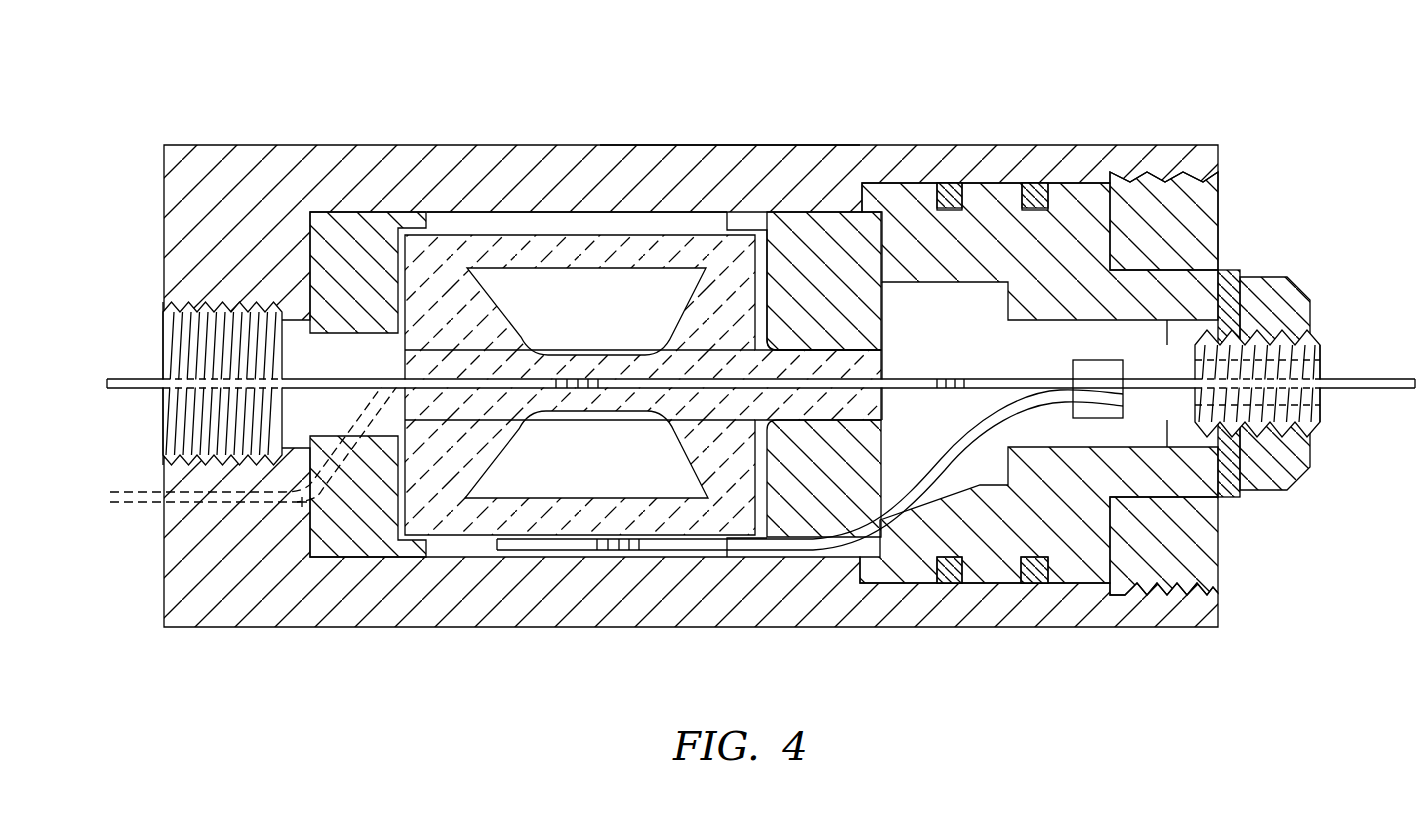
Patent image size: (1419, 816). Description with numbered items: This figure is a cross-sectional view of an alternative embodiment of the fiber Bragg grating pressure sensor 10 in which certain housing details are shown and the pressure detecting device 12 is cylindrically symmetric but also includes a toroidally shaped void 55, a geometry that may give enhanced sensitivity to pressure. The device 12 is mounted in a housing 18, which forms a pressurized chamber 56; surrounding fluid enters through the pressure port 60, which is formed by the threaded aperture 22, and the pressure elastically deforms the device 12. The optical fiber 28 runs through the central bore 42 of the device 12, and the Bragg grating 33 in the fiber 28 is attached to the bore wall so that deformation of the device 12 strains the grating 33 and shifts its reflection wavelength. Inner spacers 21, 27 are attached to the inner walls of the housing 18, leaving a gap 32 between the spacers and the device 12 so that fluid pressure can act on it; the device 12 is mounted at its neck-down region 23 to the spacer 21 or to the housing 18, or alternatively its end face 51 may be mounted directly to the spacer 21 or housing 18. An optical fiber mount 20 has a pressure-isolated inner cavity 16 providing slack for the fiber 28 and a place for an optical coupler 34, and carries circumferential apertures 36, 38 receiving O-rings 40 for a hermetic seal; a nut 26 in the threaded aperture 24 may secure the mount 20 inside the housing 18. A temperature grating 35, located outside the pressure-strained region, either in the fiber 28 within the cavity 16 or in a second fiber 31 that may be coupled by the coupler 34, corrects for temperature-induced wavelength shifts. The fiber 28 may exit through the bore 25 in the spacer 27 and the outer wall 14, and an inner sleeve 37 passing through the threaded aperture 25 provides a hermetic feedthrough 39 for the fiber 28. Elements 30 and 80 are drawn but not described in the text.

The fiber Bragg grating pressure sensor 10 is at (740, 374).
The pressure detecting device 12 is at (643, 353).
The outer wall 14 is at (222, 628).
The inner cavity 16 is at (972, 312).
The housing 18 is at (691, 381).
The optical fiber mount 20 is at (1040, 221).
The inner spacer 21 is at (788, 212).
The threaded aperture 22 is at (172, 320).
The neck-down region 23 is at (845, 355).
The threaded aperture 24 is at (1160, 178).
The threaded aperture 25 is at (302, 502).
The nut 26 is at (1218, 210).
The inner spacer 27 is at (352, 226).
The optical fiber 28 is at (126, 380).
The lower block 30 is at (1016, 549).
The second optical fiber 31 is at (497, 543).
The gap 32 is at (398, 527).
The Bragg grating 33 is at (568, 392).
The optical coupler 34 is at (1073, 370).
The temperature grating 35 is at (980, 370).
The circumferential aperture 36 is at (930, 584).
The inner sleeve 37 is at (1312, 322).
The circumferential aperture 38 is at (1035, 584).
The hermetic feedthrough 39 is at (1320, 370).
The O-ring 40 is at (945, 195).
The central bore 42 is at (441, 380).
The end face 51 is at (753, 258).
The toroidally shaped void 55 is at (566, 317).
The pressurized chamber 56 is at (503, 215).
The pressure port 60 is at (165, 425).
The passage 80 is at (110, 500).